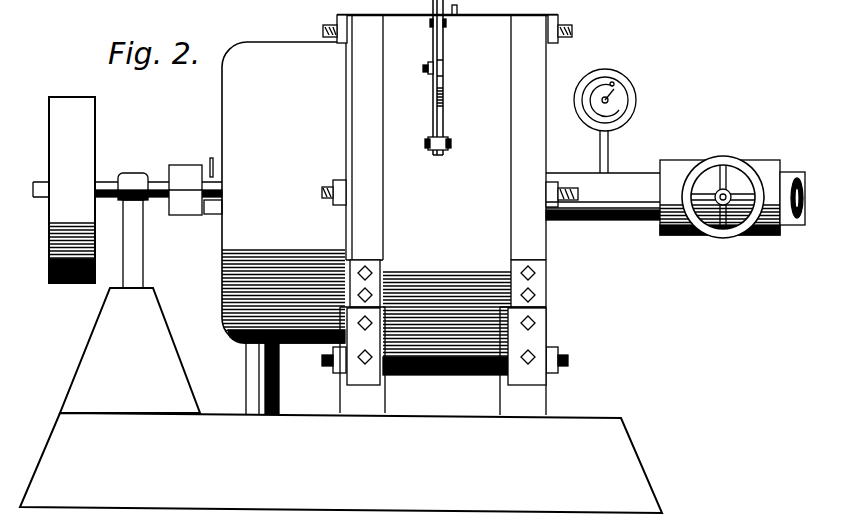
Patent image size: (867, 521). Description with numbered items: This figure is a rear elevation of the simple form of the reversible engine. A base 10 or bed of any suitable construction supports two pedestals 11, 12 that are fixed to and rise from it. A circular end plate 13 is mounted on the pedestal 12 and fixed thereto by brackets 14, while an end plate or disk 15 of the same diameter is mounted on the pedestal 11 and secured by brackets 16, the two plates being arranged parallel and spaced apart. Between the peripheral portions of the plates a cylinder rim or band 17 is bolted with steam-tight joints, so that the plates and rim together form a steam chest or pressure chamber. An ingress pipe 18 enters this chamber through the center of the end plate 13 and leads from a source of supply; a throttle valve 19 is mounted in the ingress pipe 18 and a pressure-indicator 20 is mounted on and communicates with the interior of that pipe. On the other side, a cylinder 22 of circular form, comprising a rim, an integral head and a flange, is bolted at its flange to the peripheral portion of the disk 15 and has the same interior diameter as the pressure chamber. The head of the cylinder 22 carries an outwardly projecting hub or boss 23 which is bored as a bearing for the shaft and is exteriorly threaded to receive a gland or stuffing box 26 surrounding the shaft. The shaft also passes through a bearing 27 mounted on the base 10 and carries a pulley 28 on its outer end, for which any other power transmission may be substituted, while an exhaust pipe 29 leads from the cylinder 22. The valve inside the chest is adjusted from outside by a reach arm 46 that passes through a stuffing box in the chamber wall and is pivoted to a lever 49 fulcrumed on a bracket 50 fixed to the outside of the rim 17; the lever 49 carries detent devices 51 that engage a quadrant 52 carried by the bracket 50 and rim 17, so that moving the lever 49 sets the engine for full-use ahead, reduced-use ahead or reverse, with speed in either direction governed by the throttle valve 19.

The base 10 is at (341, 400).
The pedestal 11 is at (362, 361).
The pedestal 12 is at (523, 361).
The end plate 13 is at (528, 137).
The brackets 14 is at (546, 297).
The end plate or disk 15 is at (364, 137).
The brackets 16 is at (360, 373).
The cylinder rim or band 17 is at (447, 279).
The ingress pipe 18 is at (603, 196).
The throttle valve 19 is at (726, 193).
The pressure-indicator 20 is at (624, 101).
The cylinder 22 is at (283, 192).
The hub or boss 23 is at (214, 186).
The gland or stuffing box 26 is at (178, 172).
The bearing 27 is at (127, 174).
The pulley 28 is at (72, 190).
The exhaust pipe 29 is at (254, 383).
The reach arm 46 is at (429, 71).
The lever 49 is at (443, 50).
The bracket 50 is at (446, 137).
The detent devices 51 is at (444, 68).
The quadrant 52 is at (444, 110).